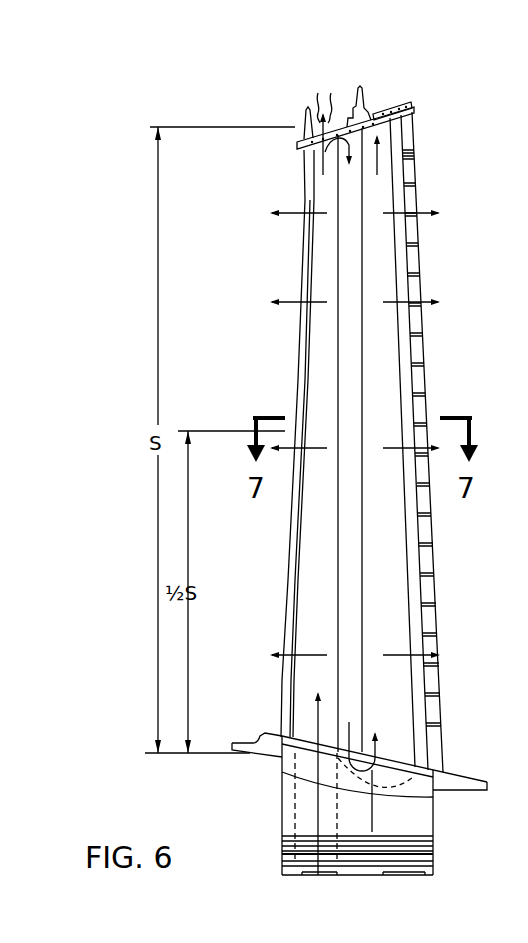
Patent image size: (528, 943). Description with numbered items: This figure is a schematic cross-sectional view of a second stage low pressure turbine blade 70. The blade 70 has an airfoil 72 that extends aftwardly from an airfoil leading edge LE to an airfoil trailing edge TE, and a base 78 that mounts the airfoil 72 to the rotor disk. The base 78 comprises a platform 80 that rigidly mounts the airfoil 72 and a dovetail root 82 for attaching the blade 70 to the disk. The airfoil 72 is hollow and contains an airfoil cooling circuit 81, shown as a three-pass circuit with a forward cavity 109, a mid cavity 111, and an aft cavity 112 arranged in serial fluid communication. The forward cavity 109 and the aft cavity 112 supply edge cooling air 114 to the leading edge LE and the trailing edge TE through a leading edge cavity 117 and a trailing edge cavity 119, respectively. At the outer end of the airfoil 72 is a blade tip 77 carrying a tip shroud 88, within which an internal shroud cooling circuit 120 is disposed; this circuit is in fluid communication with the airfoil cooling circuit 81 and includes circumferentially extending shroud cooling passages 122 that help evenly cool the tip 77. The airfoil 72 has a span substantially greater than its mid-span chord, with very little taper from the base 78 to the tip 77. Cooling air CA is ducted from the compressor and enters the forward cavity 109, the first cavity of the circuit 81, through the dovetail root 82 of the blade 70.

The low pressure turbine blade 70 is at (500, 854).
The airfoil 72 is at (291, 520).
The blade tip 77 is at (410, 130).
The base 78 is at (427, 778).
The platform 80 is at (460, 782).
The airfoil cooling circuit 81 is at (383, 518).
The dovetail root 82 is at (281, 793).
The tip shroud 88 is at (413, 108).
The forward cavity 109 is at (322, 260).
The mid cavity 111 is at (348, 335).
The aft cavity 112 is at (397, 603).
The edge cooling air 114 is at (283, 813).
The leading edge cavity 117 is at (289, 580).
The trailing edge cavity 119 is at (413, 557).
The shroud cooling circuit 120 is at (377, 98).
The shroud cooling passages 122 is at (319, 95).
The airfoil trailing edge TE is at (417, 258).
The airfoil leading edge LE is at (298, 348).
The cooling air CA is at (318, 875).